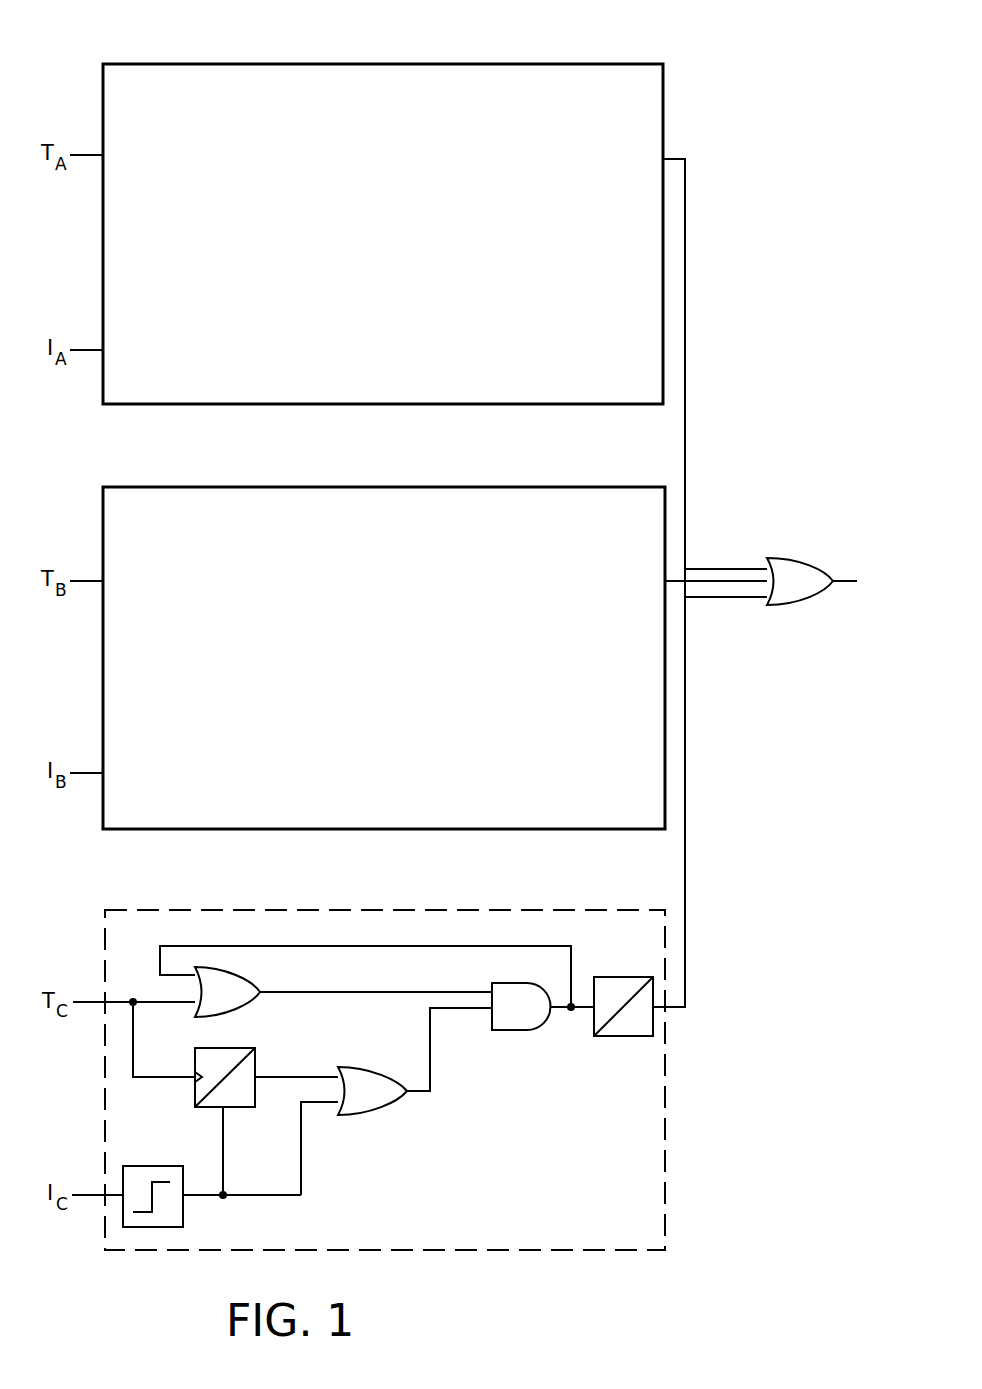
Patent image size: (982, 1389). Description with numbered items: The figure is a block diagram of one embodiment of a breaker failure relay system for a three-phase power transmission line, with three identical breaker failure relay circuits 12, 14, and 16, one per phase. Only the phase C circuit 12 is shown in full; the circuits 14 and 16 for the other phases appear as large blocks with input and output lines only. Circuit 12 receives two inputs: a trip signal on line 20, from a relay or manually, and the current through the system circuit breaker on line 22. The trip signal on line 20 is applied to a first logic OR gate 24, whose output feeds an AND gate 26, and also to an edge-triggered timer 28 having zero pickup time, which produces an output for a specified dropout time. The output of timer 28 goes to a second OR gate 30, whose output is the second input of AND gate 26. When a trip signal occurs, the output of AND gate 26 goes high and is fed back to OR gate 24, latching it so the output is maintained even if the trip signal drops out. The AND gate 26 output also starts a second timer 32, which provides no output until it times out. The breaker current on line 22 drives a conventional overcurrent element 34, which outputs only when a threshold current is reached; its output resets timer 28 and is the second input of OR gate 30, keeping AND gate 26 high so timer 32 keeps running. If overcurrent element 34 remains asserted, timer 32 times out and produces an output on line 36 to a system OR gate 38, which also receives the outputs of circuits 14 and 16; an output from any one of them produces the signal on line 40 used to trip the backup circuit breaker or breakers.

The breaker failure relay circuit 12 is at (190, 910).
The breaker failure relay circuit 14 is at (188, 487).
The breaker failure relay circuit 16 is at (203, 63).
The line 20 is at (83, 1000).
The line 22 is at (90, 1197).
The first logic OR gate 24 is at (255, 980).
The AND gate 26 is at (522, 1032).
The edge-triggered timer 28 is at (250, 1048).
The second OR gate 30 is at (380, 1113).
The second timer 32 is at (625, 1037).
The overcurrent element 34 is at (185, 1208).
The line 36 is at (685, 695).
The system OR gate 38 is at (793, 558).
The line 40 is at (843, 583).